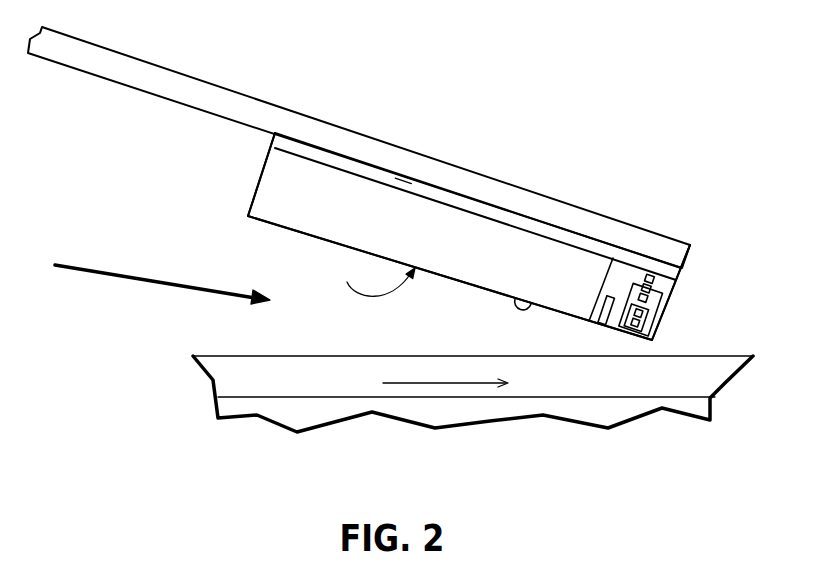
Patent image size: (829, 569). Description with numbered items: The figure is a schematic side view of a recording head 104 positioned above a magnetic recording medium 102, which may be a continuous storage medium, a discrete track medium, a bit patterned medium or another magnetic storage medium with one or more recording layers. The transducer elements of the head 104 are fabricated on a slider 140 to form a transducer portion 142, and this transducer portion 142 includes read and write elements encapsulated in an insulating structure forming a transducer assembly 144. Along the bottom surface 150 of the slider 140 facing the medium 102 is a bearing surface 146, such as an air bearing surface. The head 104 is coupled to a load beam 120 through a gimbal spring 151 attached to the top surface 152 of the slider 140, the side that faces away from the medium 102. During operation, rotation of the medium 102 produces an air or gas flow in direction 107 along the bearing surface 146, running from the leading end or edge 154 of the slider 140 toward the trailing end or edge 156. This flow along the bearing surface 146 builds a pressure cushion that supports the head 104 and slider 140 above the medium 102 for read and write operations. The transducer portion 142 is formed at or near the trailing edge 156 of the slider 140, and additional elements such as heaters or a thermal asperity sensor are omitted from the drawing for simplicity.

The medium 102 is at (689, 383).
The head 104 is at (684, 243).
The direction 107 is at (452, 383).
The load beam 120 is at (295, 123).
The slider 140 is at (438, 227).
The transducer portion 142 is at (686, 280).
The transducer assembly 144 is at (668, 268).
The bearing surface 146 is at (370, 278).
The bottom surface 150 is at (536, 303).
The gimbal spring 151 is at (403, 180).
The top surface 152 is at (530, 223).
The leading end or edge 154 is at (260, 175).
The trailing end or edge 156 is at (670, 302).